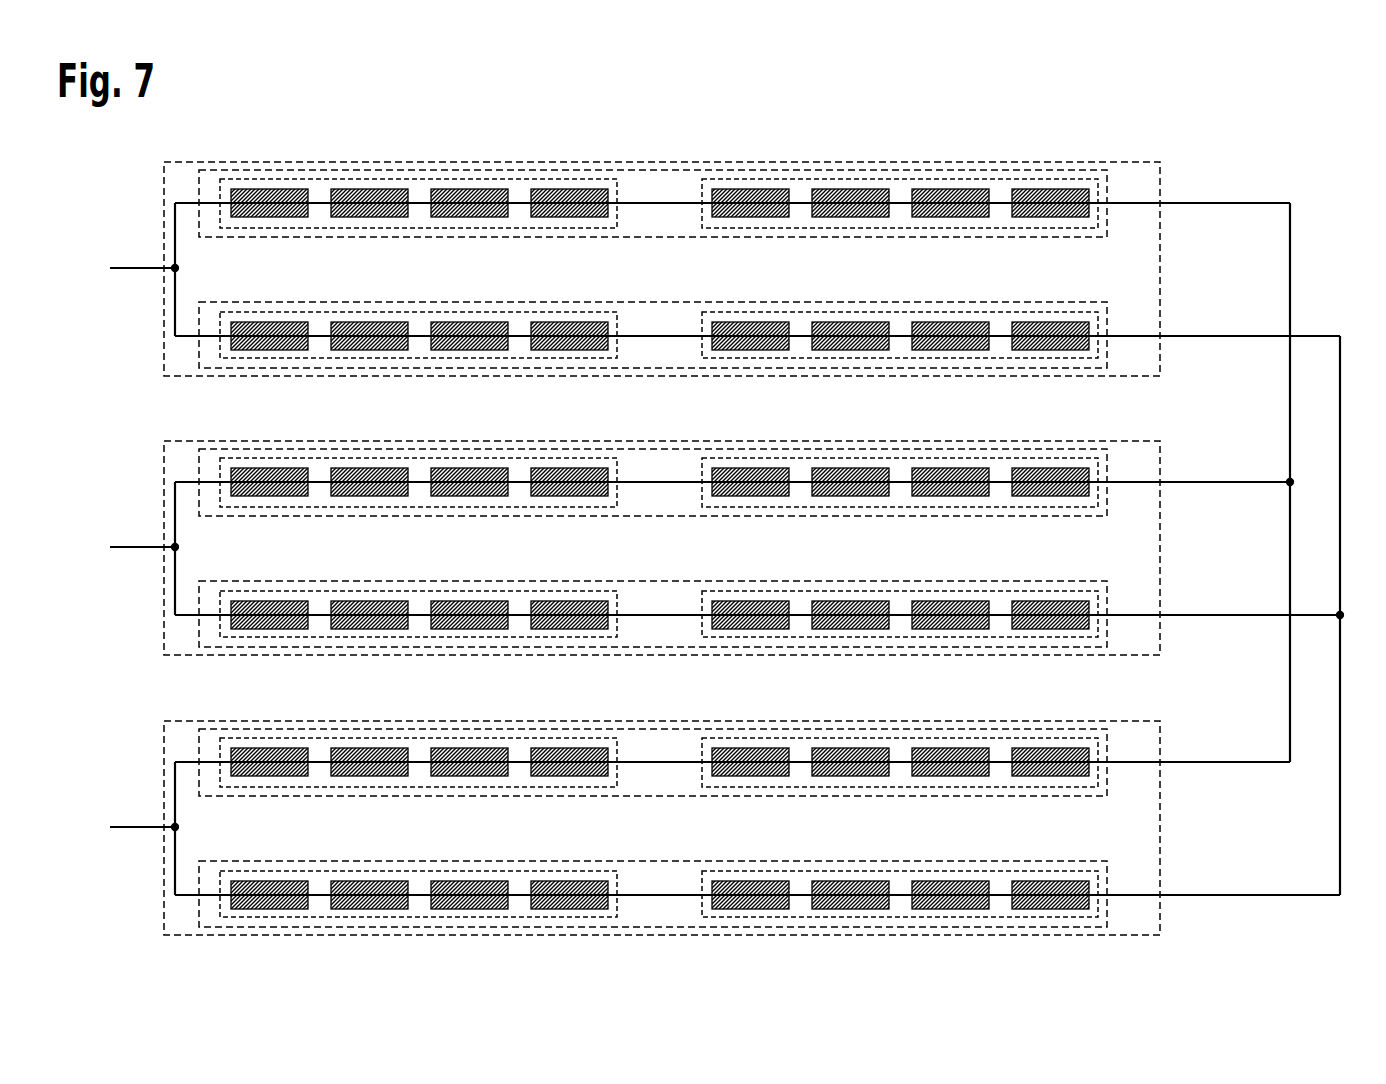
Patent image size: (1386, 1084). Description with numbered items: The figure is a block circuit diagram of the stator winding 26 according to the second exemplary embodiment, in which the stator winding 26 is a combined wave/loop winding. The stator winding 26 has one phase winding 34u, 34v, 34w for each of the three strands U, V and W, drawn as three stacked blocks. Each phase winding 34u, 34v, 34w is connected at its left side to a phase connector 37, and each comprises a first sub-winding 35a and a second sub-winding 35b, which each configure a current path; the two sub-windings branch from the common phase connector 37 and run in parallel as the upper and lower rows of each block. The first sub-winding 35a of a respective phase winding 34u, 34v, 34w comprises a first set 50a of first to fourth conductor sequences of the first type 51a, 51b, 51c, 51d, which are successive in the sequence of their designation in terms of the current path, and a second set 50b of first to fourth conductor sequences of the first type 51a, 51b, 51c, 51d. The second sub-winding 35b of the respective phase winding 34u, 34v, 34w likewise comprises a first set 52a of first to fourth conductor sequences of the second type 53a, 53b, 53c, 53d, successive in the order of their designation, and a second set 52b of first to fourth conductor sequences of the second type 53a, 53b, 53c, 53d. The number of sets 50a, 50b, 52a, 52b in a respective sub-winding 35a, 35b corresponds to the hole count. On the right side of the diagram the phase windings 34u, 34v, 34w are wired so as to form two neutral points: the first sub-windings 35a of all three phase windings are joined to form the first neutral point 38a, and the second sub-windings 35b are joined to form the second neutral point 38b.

The stator winding 26 is at (1200, 120).
The phase winding 34u is at (1162, 178).
The phase winding 34v is at (1162, 458).
The phase winding 34w is at (1162, 737).
The first sub-winding 35a is at (1112, 184).
The second sub-winding 35b is at (1110, 320).
The phase connector 37 is at (119, 268).
The first neutral point 38a is at (1290, 483).
The second neutral point 38b is at (1340, 614).
The first set of conductor sequences of the first type 50a is at (221, 186).
The second set of conductor sequences of the first type 50b is at (703, 180).
The first conductor sequence of the first type 51a is at (268, 189).
The second conductor sequence of the first type 51b is at (369, 189).
The third conductor sequence of the first type 51c is at (469, 189).
The fourth conductor sequence of the first type 51d is at (569, 189).
The first set of conductor sequences of the second type 52a is at (222, 357).
The second set of conductor sequences of the second type 52b is at (703, 358).
The first conductor sequence of the second type 53a is at (268, 350).
The second conductor sequence of the second type 53b is at (369, 350).
The third conductor sequence of the second type 53c is at (469, 350).
The fourth conductor sequence of the second type 53d is at (569, 350).